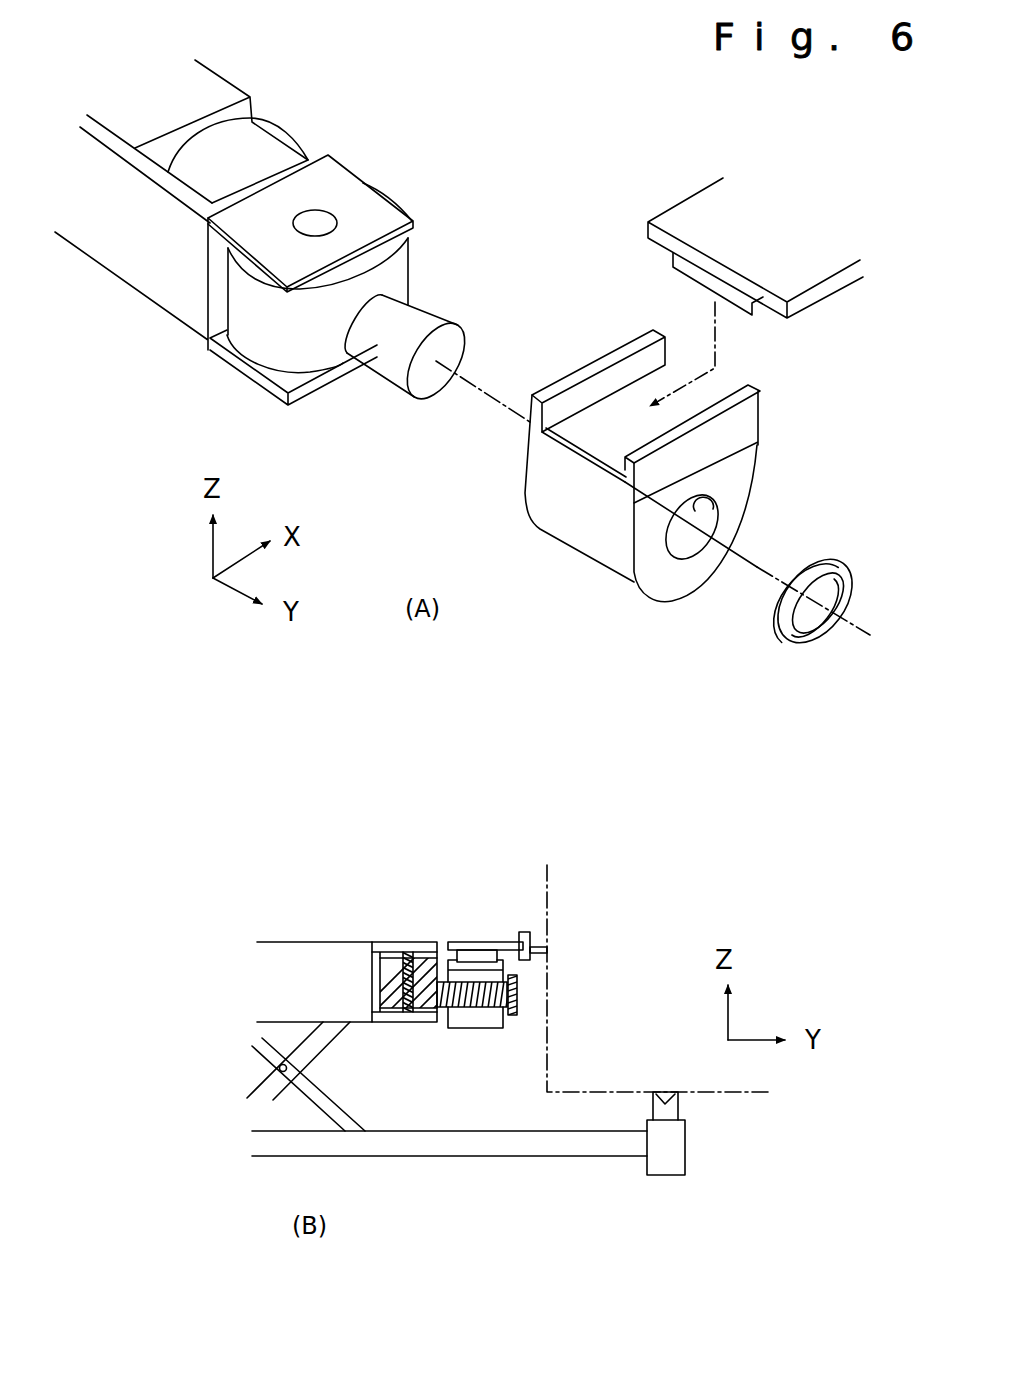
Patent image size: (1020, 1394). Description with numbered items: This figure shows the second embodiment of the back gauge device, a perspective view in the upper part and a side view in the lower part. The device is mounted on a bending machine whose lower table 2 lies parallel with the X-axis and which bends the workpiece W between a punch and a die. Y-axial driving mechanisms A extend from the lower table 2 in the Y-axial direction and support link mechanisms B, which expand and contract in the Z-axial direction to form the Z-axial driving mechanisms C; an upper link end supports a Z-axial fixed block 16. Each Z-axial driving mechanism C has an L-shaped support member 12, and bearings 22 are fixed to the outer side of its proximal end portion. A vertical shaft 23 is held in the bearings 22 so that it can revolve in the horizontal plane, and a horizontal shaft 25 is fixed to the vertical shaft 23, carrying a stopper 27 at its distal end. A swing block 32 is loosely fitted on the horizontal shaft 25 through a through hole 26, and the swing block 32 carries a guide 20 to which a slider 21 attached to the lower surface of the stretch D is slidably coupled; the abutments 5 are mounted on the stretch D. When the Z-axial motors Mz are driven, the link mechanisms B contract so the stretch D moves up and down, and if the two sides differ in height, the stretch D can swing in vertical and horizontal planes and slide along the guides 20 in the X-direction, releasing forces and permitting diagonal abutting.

The lower table 2 is at (675, 1148).
The abutment 5 is at (546, 948).
The L-shaped support member 12 is at (160, 273).
The Z-axial fixed block 16 is at (213, 95).
The guide 20 is at (655, 476).
The slider 21 is at (690, 270).
The bearing 22 is at (235, 223).
The vertical shaft 23 is at (397, 275).
The horizontal shaft 25 is at (395, 362).
The through hole 26 is at (712, 502).
The stopper 27 is at (823, 562).
The swing block 32 is at (540, 505).
The Z-axial motor Mz is at (283, 156).
The Z-axial driving mechanism C is at (432, 167).
The stretch D is at (690, 186).
The workpiece W is at (552, 1038).
The Y-axial driving mechanism A is at (410, 1125).
The link mechanism B is at (315, 1072).